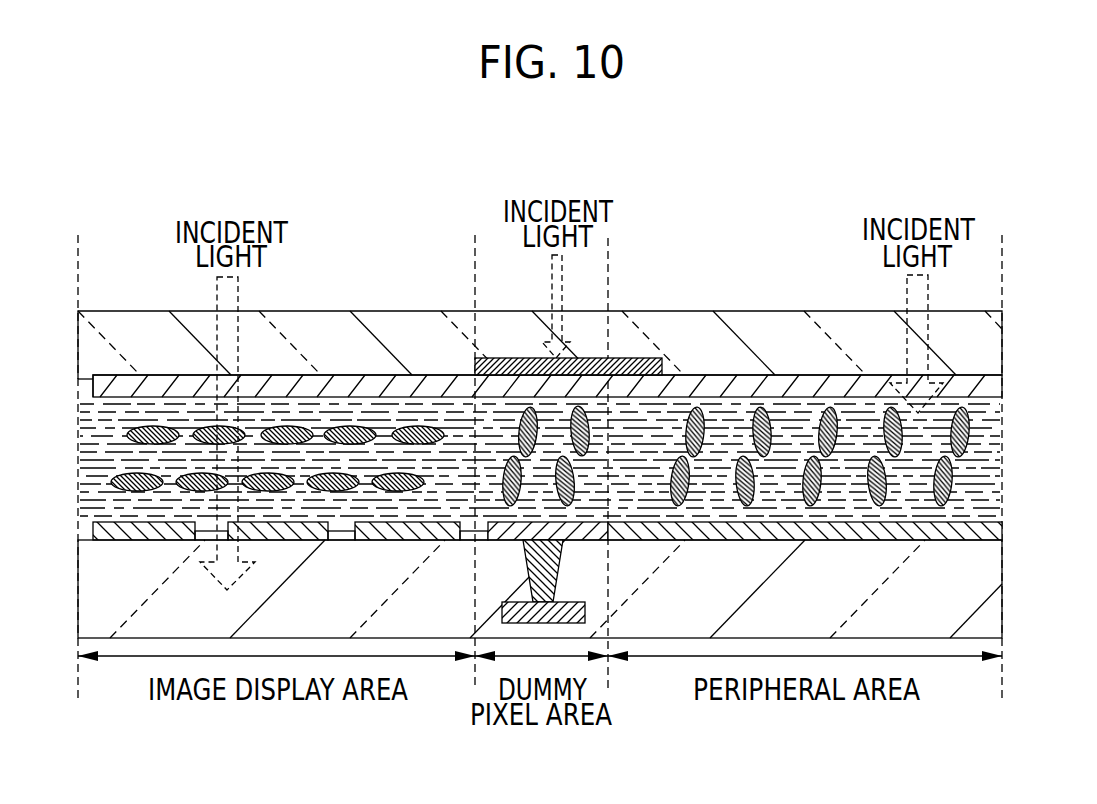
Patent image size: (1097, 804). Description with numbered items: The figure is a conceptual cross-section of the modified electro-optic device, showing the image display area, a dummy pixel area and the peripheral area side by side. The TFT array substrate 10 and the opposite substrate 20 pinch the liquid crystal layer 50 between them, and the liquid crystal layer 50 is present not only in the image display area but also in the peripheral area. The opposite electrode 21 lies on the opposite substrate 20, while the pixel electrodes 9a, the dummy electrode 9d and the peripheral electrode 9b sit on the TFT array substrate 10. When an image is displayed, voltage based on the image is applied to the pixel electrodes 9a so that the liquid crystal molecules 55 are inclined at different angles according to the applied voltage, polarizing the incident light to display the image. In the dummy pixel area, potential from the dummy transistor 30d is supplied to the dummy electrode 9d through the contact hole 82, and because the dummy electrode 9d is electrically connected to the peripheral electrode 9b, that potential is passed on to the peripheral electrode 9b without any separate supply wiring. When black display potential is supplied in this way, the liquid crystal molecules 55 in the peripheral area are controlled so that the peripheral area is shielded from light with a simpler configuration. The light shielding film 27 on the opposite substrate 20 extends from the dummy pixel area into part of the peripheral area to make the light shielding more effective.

The opposite substrate 20 is at (1002, 335).
The opposite electrode 21 is at (1002, 383).
The light shielding film 27 is at (662, 358).
The liquid crystal layer 50 is at (1002, 447).
The liquid crystal molecules 55 is at (420, 426).
The pixel electrode 9a is at (143, 540).
The peripheral electrode 9b is at (1002, 531).
The dummy electrode 9d is at (512, 536).
The TFT array substrate 10 is at (1002, 578).
The contact hole 82 is at (553, 565).
The dummy transistor 30d is at (585, 607).